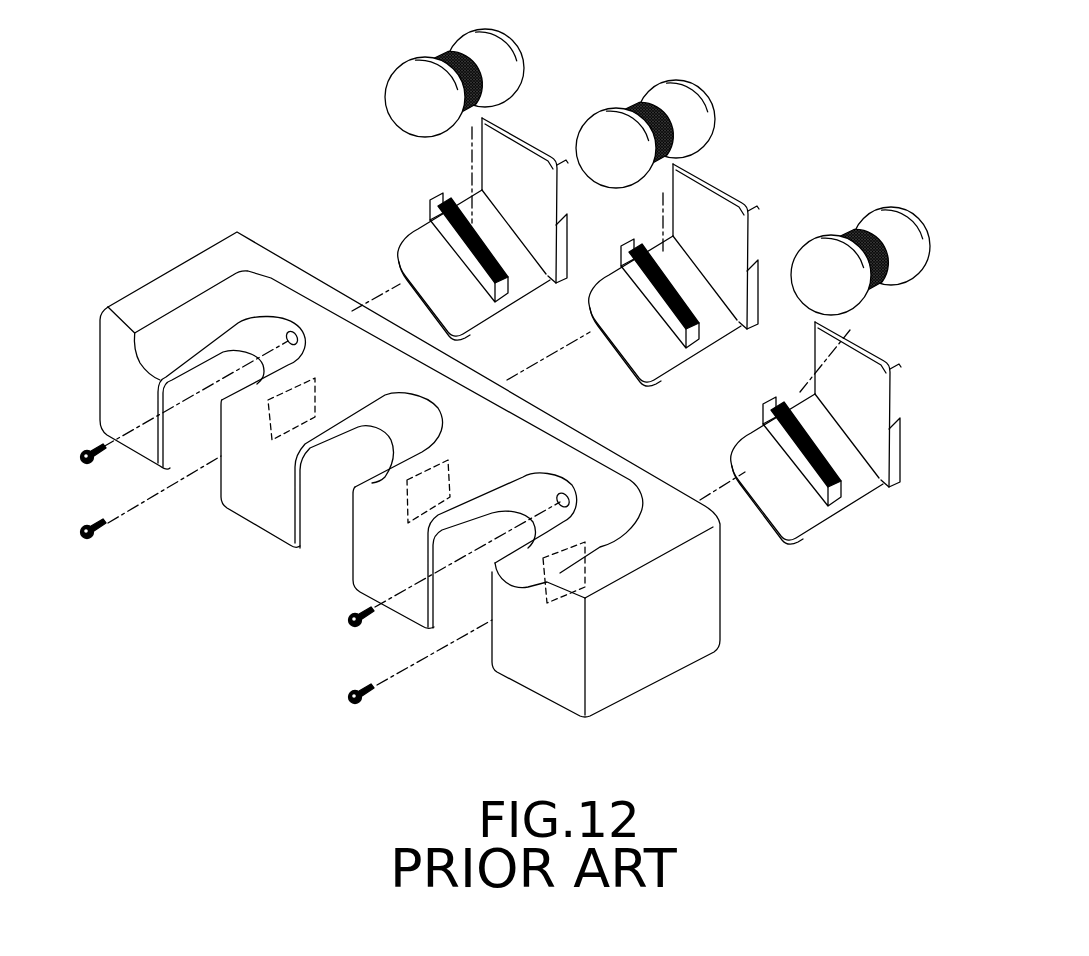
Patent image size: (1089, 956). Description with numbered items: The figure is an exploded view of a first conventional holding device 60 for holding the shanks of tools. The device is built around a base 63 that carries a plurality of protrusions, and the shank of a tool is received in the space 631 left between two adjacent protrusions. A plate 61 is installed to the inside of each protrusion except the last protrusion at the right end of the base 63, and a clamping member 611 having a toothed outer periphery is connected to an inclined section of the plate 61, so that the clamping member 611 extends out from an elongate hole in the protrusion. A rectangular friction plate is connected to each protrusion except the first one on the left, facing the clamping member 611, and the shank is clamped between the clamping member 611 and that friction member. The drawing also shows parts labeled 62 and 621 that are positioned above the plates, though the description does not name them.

The holding device 60 is at (245, 152).
The plate 61 is at (843, 505).
The clamping member 611 is at (778, 404).
The coil 62 is at (719, 172).
The winding of coil 621 is at (860, 215).
The base 63 is at (667, 658).
The space 631 is at (340, 557).